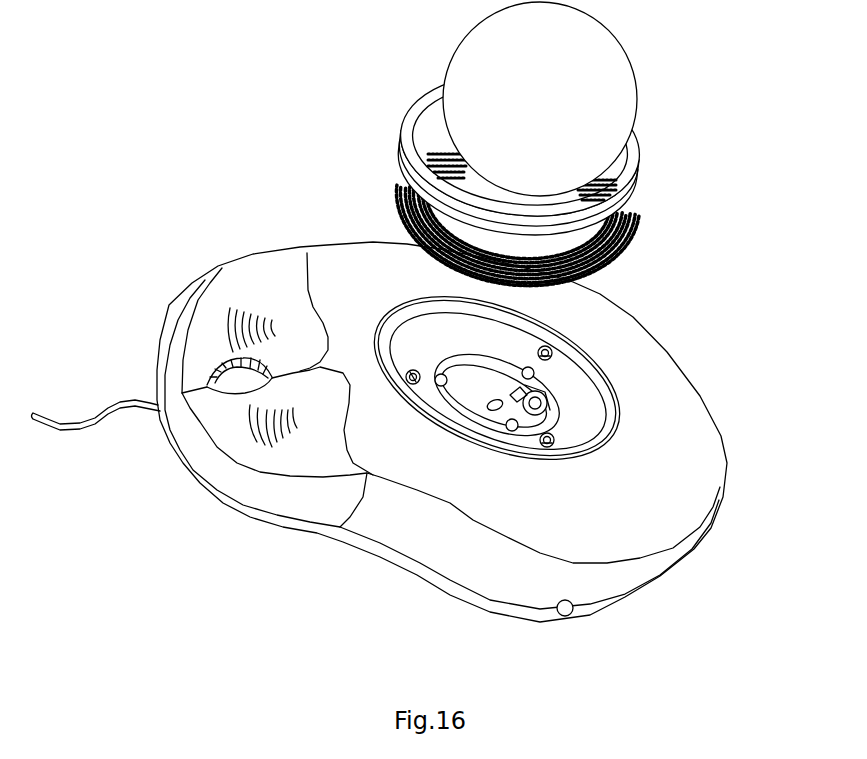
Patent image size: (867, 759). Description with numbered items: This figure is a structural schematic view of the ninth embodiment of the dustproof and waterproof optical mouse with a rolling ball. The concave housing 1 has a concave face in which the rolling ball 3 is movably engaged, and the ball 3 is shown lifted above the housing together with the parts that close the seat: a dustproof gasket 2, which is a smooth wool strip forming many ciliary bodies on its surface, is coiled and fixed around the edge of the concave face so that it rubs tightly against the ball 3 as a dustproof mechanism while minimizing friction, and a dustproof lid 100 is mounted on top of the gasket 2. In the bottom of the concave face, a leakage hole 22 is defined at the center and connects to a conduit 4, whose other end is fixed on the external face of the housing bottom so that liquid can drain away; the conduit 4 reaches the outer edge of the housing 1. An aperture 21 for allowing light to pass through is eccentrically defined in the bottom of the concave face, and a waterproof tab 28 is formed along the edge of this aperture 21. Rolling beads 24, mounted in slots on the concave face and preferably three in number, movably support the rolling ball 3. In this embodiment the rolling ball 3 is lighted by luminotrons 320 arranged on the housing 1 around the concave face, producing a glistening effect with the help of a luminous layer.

The concave housing 1 is at (655, 478).
The dustproof gasket 2 is at (570, 368).
The rolling ball 3 is at (612, 45).
The conduit 4 is at (568, 615).
The aperture 21 is at (548, 394).
The leakage hole 22 is at (534, 376).
The rolling beads 24 is at (520, 427).
The waterproof tab 28 is at (502, 404).
The dustproof lid 100 is at (623, 173).
The luminotrons 320 is at (548, 354).